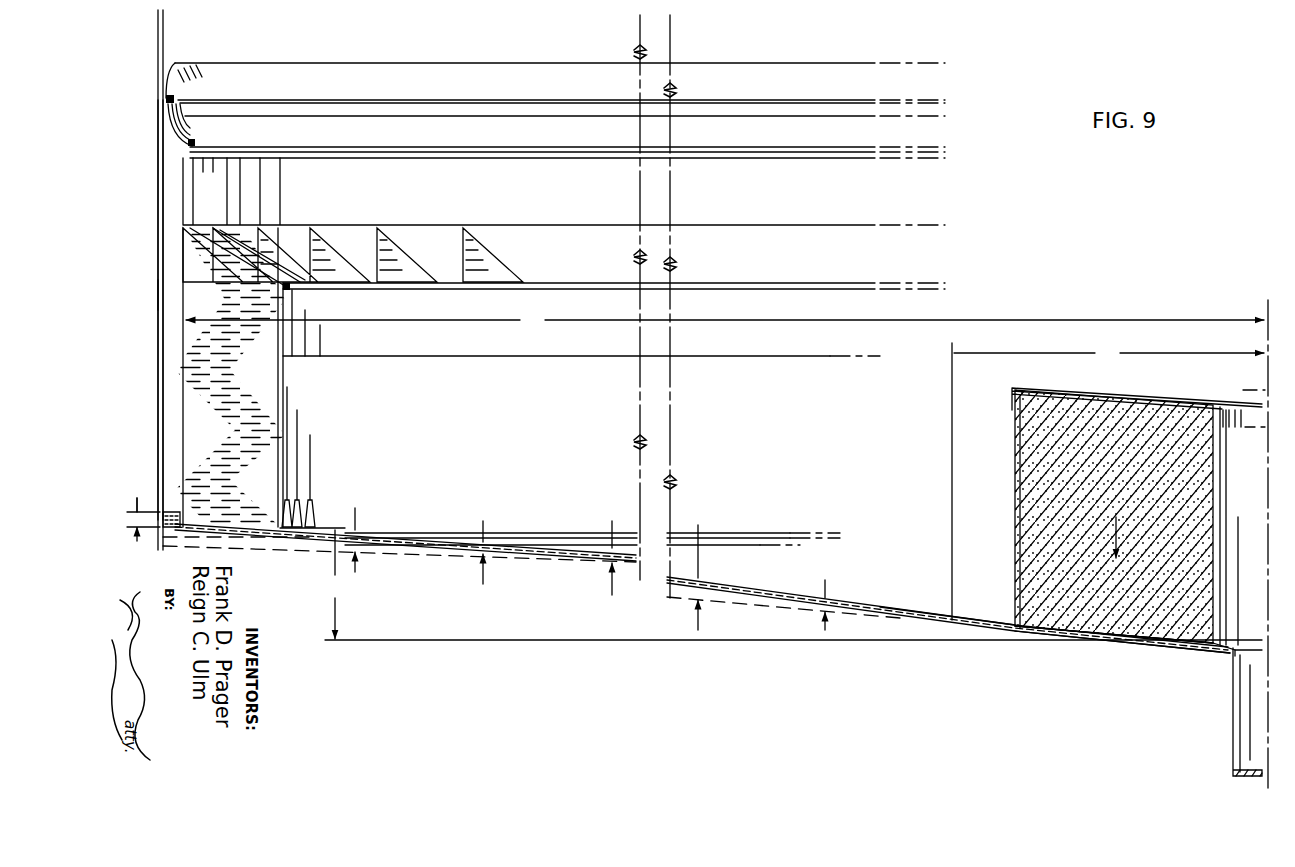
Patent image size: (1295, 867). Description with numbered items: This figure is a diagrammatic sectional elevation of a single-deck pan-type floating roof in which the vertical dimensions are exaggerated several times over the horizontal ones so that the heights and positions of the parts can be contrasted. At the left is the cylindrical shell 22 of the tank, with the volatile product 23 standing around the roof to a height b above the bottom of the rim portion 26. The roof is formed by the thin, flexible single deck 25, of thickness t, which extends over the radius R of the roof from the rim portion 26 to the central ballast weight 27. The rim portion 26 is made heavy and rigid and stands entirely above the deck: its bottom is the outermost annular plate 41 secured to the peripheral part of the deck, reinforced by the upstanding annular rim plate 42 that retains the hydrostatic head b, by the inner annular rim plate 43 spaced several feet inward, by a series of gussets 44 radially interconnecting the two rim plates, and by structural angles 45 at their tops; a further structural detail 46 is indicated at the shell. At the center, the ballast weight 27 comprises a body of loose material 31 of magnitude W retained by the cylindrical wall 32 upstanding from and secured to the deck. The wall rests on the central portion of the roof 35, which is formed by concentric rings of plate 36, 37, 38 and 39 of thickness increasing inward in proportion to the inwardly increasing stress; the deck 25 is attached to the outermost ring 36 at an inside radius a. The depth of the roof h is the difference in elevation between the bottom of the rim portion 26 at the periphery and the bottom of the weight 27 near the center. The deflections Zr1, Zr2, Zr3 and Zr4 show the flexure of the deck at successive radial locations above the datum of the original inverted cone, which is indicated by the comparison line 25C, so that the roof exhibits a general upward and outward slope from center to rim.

The cylindrical shell 22 is at (160, 388).
The volatile liquid or product 23 is at (167, 515).
The single deck 25 is at (532, 546).
The original cone shape comparison 25C is at (583, 565).
The rim portion 26 is at (270, 202).
The ballast weight 27 is at (970, 390).
The body of loose material 31 is at (1132, 395).
The cylindrical wall 32 is at (1013, 477).
The central portion of the roof 35 is at (1100, 652).
The outermost ring 36 is at (993, 632).
The second ring 37 is at (1070, 637).
The second-last ring 38 is at (1130, 648).
The innermost ring 39 is at (1203, 651).
The outermost annular plate 41 is at (292, 540).
The upstanding annular rim plate 42 is at (184, 385).
The inner annular rim plate 43 is at (277, 452).
The gussets 44 is at (345, 230).
The structural angles 45 is at (195, 150).
The sheathing 46 is at (163, 293).
The radius of the roof R is at (725, 320).
The inside radius of the flexible deck a is at (1109, 353).
The height of the product above the rim bottom b is at (143, 508).
The thickness of the deck t is at (352, 532).
The depth of the roof h is at (793, 585).
The magnitude of the central ballast weight W is at (1115, 524).
The deflection at location r1 Zr1 is at (821, 591).
The deflection at location r2 Zr2 is at (695, 563).
The deflection at location r3 Zr3 is at (609, 543).
The deflection at location r4 Zr4 is at (485, 537).